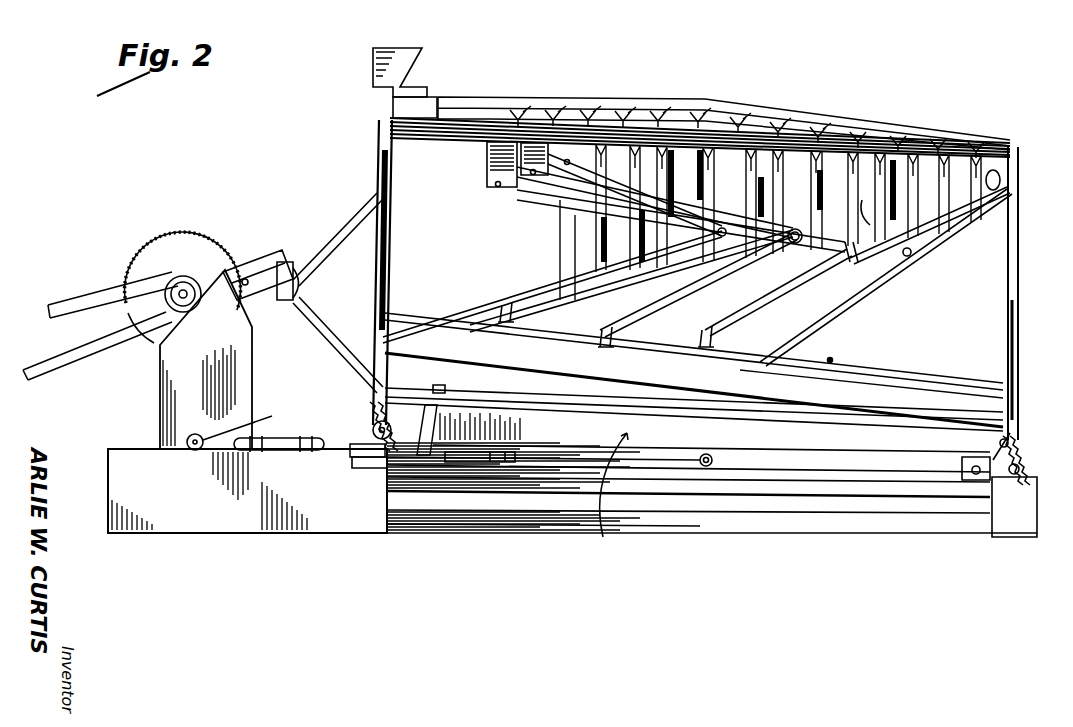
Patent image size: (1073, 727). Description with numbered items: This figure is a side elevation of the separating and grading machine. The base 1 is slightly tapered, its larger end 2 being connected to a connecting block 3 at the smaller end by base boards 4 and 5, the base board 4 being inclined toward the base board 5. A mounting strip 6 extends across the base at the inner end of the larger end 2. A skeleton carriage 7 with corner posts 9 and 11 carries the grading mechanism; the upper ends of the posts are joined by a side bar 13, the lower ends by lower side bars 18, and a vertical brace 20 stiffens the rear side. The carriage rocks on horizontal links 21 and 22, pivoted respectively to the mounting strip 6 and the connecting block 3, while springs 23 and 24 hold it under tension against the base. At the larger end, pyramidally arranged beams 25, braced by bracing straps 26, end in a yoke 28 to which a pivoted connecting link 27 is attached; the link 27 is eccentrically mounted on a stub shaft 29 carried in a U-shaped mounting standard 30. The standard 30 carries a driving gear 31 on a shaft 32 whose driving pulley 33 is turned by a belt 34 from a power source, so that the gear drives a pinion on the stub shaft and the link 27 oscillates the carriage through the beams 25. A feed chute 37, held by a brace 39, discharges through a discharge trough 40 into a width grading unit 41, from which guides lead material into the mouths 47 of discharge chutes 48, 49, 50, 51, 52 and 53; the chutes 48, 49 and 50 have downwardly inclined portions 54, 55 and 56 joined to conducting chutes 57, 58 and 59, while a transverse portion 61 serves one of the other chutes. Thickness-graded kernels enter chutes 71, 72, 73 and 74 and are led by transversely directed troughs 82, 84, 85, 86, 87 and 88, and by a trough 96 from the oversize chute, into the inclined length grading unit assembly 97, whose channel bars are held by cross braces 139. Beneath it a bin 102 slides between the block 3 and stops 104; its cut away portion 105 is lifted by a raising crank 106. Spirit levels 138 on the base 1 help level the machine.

The base 1 is at (170, 518).
The larger end of the base 2 is at (320, 520).
The connecting block 3 is at (1007, 533).
The base board 4 is at (808, 490).
The base board 5 is at (845, 525).
The mounting strip 6 is at (354, 460).
The carriage 7 is at (1020, 312).
The corner post 9 is at (415, 275).
The corner post 11 is at (1020, 275).
The side bar 13 is at (922, 140).
The lower side bar 18 is at (556, 398).
The vertical brace 20 is at (615, 337).
The link 21 is at (358, 446).
The link 22 is at (992, 477).
The spring 23 is at (405, 412).
The spring 24 is at (1015, 478).
The pyramidally arranged beams 25 is at (340, 225).
The bracing straps 26 is at (318, 280).
The pivoted connecting link 27 is at (268, 255).
The yoke 28 is at (286, 305).
The stub shaft 29 is at (244, 278).
The U-shaped mounting standard 30 is at (225, 400).
The driving gear 31 is at (168, 250).
The shaft 32 is at (178, 294).
The driving pulley 33 is at (193, 300).
The belt 34 is at (108, 352).
The feed chute 37 is at (430, 62).
The brace 39 is at (458, 97).
The discharge trough 40 is at (425, 95).
The width grading unit 41 is at (471, 94).
The mouths 47 is at (542, 106).
The discharge chute 48 is at (490, 163).
The discharge chute 49 is at (520, 180).
The discharge chute 50 is at (585, 106).
The discharge chute 51 is at (622, 110).
The discharge chute 52 is at (660, 113).
The discharge chute 53 is at (700, 116).
The downwardly inclined portion 54 is at (545, 195).
The downwardly inclined portion 55 is at (575, 205).
The downwardly inclined portion 56 is at (600, 215).
The conducting chute 57 is at (548, 290).
The conducting chute 58 is at (682, 285).
The conducting chute 59 is at (768, 300).
The downwardly and transversely disposed portion 61 is at (770, 222).
The chute 71 is at (742, 126).
The chute 72 is at (780, 128).
The chute 73 is at (818, 130).
The chute 74 is at (855, 133).
The transversely directed trough 82 is at (795, 246).
The transversely directed trough 84 is at (890, 135).
The transversely directed trough 85 is at (880, 205).
The transversely directed trough 86 is at (958, 145).
The transversely directed trough 87 is at (985, 148).
The transversely directed trough 88 is at (1003, 182).
The trough 96 is at (855, 298).
The length grading unit assembly 97 is at (886, 372).
The bin 102 is at (606, 501).
The stops 104 is at (462, 373).
The cut away portion 105 is at (470, 455).
The raising crank 106 is at (452, 462).
The spirit levels 138 is at (272, 416).
The cross braces 139 is at (862, 355).